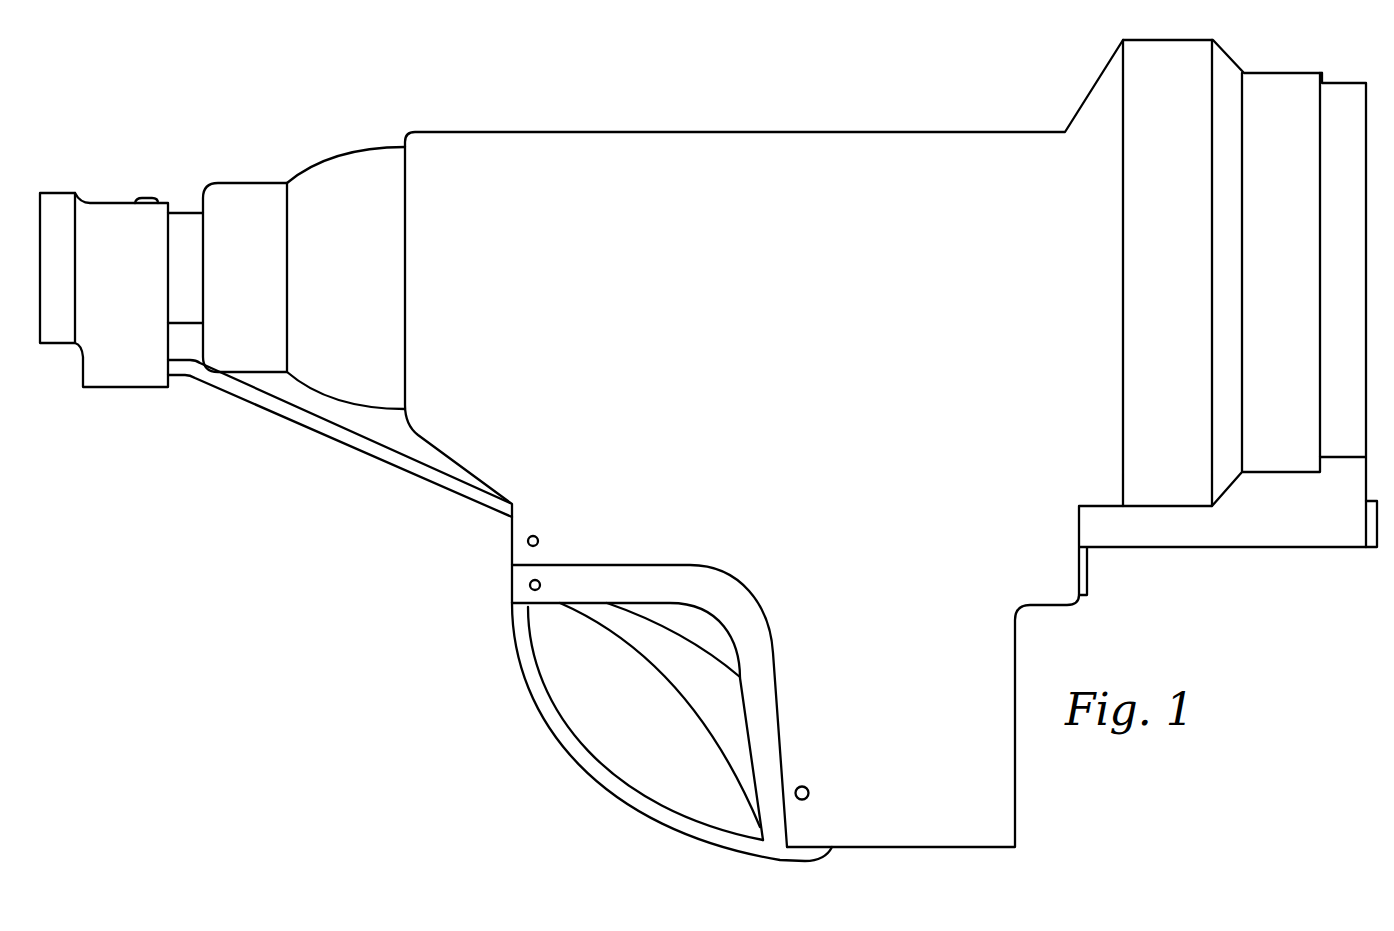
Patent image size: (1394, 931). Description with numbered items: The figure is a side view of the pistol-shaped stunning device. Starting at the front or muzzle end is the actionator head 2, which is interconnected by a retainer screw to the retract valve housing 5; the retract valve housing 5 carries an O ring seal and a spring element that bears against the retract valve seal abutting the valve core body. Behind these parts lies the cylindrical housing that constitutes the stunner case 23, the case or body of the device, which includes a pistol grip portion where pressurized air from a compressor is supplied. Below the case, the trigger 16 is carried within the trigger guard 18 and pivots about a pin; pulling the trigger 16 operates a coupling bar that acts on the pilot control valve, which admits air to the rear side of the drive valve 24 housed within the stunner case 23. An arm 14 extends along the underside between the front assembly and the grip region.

The actionator head 2 is at (66, 193).
The retract valve housing 5 is at (230, 183).
The bracket arm 14 is at (323, 437).
The trigger 16 is at (632, 645).
The trigger guard 18 is at (542, 713).
The stunner case 23 is at (655, 132).
The drive valve 24 is at (1336, 83).